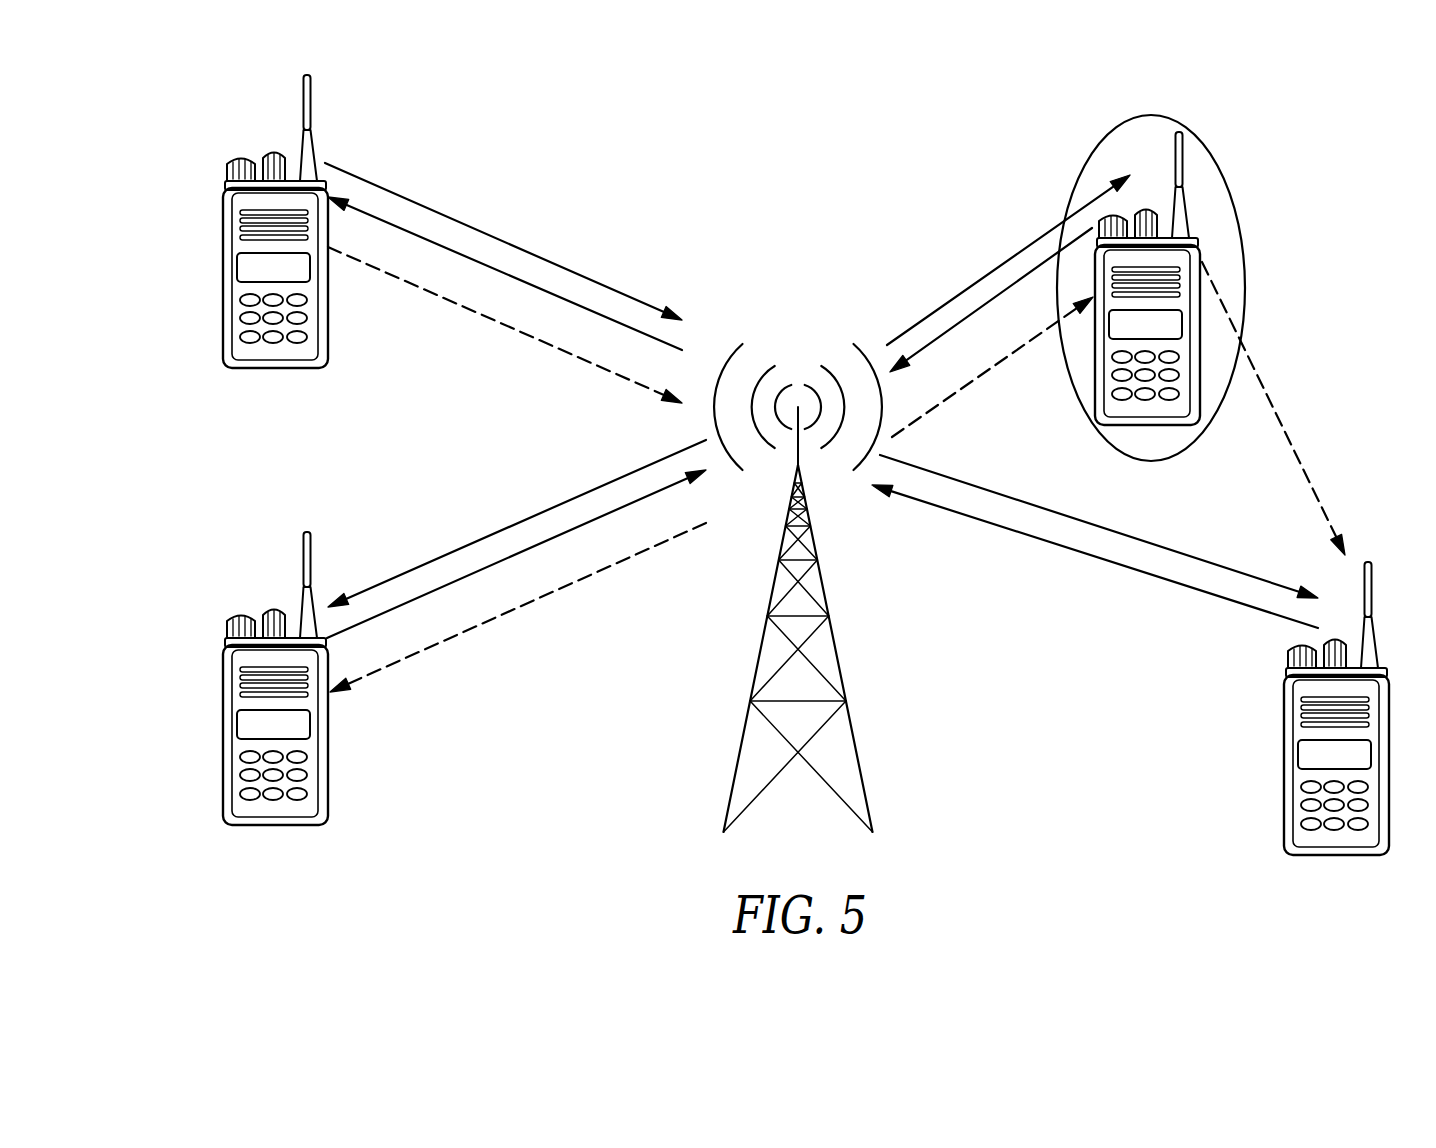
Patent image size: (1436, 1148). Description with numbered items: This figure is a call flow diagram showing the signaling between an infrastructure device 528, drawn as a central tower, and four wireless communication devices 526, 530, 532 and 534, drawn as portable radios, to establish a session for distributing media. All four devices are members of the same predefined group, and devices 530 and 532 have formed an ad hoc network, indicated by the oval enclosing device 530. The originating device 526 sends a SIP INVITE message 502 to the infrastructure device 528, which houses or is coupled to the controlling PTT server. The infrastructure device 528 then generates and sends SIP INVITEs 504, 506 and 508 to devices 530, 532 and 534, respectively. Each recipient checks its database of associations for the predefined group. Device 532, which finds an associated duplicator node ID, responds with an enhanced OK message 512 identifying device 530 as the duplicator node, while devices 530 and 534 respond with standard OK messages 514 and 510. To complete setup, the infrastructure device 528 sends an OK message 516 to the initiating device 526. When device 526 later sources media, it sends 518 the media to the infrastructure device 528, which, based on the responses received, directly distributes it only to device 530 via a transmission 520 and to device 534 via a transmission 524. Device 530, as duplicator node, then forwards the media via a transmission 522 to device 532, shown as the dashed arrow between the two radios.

The SIP INVITE message 502 is at (498, 240).
The SIP INVITE 504 is at (1010, 259).
The SIP INVITE 506 is at (1100, 527).
The SIP INVITE 508 is at (510, 526).
The standard 200 OK message 510 is at (517, 556).
The enhanced 200 OK message 512 is at (1095, 557).
The standard 200 OK message 514 is at (992, 301).
The 200 OK message 516 is at (506, 274).
The media transmission 518 is at (495, 322).
The transmission 520 is at (993, 368).
The transmission 522 is at (1274, 405).
The transmission 524 is at (518, 608).
The wireless communication device 526 is at (223, 278).
The infrastructure device 528 is at (836, 648).
The wireless communication device 530 is at (1196, 421).
The wireless communication device 532 is at (1284, 744).
The wireless communication device 534 is at (223, 714).